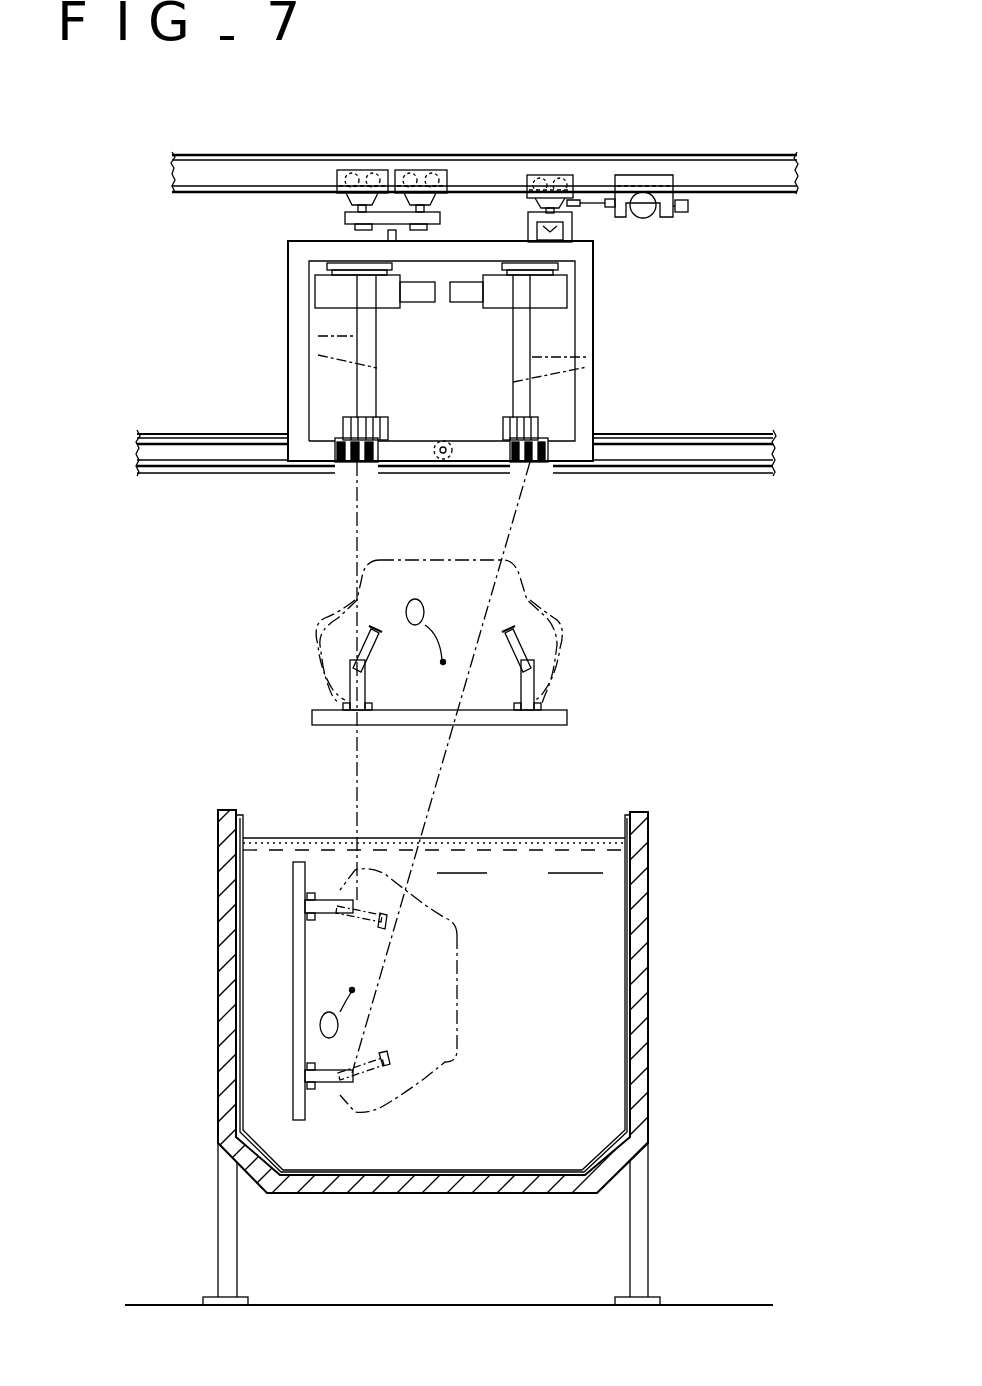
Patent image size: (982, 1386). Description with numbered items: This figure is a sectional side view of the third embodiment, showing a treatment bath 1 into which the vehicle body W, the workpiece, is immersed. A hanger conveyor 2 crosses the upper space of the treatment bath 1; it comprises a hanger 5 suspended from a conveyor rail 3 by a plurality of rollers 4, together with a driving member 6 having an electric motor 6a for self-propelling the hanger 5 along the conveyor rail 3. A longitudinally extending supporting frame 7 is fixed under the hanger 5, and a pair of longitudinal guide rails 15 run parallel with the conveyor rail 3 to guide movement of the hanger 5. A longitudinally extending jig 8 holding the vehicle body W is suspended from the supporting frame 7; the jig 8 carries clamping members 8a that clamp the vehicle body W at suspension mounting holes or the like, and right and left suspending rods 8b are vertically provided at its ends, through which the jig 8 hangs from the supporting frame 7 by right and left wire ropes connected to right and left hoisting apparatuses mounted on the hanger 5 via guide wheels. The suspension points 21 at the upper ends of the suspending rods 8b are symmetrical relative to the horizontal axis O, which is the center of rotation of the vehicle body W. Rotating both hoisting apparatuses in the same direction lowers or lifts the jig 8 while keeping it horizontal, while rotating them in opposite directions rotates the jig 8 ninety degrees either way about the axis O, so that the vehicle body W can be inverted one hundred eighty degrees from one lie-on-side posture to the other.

The treatment bath 1 is at (218, 1003).
The hanger conveyor 2 is at (470, 152).
The conveyor rail 3 is at (203, 174).
The rollers 4 is at (372, 170).
The hanger 5 is at (451, 657).
The driving member 6 is at (659, 189).
The electric motor 6a is at (643, 210).
The supporting frame 7 is at (444, 441).
The jig 8 is at (443, 675).
The clamping members 8a is at (360, 635).
The suspending rods 8b is at (355, 673).
The longitudinal guide rails 15 is at (712, 437).
The suspension points 21 is at (545, 653).
The vehicle body W is at (465, 580).
The horizontal axis O is at (383, 818).